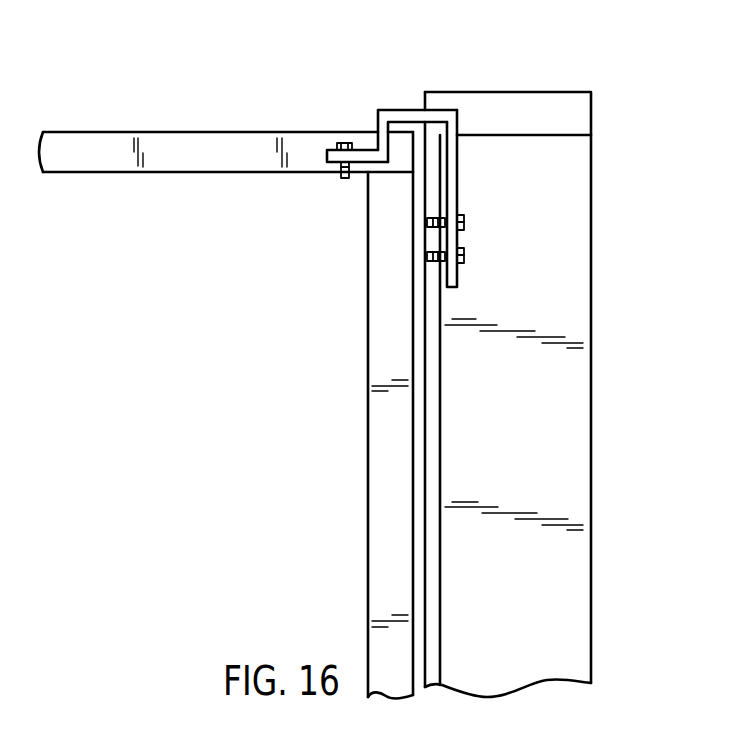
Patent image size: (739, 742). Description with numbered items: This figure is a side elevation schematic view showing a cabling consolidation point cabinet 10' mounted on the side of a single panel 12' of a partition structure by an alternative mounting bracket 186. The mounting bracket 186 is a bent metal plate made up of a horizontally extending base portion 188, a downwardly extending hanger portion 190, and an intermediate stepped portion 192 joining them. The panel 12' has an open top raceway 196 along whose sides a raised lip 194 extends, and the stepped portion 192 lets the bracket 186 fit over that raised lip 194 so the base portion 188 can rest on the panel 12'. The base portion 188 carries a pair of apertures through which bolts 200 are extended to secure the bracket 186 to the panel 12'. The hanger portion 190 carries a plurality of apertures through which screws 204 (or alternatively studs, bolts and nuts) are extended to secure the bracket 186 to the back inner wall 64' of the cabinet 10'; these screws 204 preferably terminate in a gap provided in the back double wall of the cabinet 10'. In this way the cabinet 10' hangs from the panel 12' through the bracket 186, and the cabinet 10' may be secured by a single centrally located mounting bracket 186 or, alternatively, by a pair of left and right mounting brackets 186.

The mounting bracket 186 is at (410, 146).
The base portion 188 is at (327, 148).
The hanger portion 190 is at (455, 194).
The stepped portion 192 is at (415, 110).
The raised lip 194 is at (410, 162).
The open top raceway 196 is at (78, 152).
The bolt 200 is at (345, 142).
The screws 204 is at (464, 222).
The panel 12' is at (355, 415).
The cabinet 10' is at (535, 394).
The back inner wall 64' is at (476, 410).